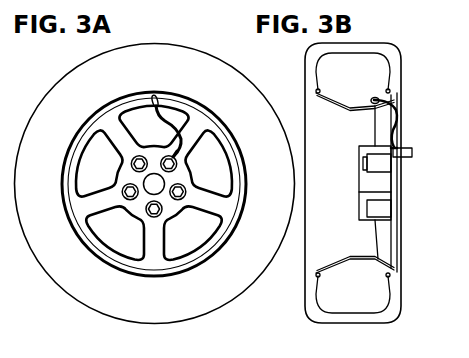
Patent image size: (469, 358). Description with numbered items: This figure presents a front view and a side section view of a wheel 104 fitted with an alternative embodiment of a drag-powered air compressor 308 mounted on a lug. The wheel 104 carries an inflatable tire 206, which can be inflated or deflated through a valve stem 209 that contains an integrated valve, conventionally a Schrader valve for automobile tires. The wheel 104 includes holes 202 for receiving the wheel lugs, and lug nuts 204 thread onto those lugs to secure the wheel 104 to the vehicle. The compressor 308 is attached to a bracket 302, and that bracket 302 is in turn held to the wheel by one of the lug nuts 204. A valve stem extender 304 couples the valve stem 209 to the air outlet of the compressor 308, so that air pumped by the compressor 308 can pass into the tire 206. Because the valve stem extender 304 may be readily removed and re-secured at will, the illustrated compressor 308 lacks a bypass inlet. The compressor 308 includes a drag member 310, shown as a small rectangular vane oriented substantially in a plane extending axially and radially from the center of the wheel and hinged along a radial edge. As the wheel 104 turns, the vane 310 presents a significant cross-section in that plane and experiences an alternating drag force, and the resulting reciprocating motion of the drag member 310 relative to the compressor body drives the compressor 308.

In FIG. 3A, the wheel 104 is at (207, 262).
In FIG. 3B, the wheel 104 is at (328, 263).
In FIG. 3B, the holes 202 is at (360, 163).
In FIG. 3A, the lug nuts 204 is at (178, 199).
In FIG. 3A, the inflatable tire 206 is at (236, 297).
In FIG. 3B, the inflatable tire 206 is at (401, 300).
In FIG. 3A, the valve stem 209 is at (152, 99).
In FIG. 3B, the valve stem 209 is at (373, 104).
In FIG. 3B, the bracket 302 is at (373, 157).
In FIG. 3A, the valve stem extender 304 is at (157, 112).
In FIG. 3B, the valve stem extender 304 is at (401, 121).
In FIG. 3A, the drag-powered air compressor 308 is at (178, 158).
In FIG. 3B, the drag-powered air compressor 308 is at (397, 148).
In FIG. 3B, the drag member 310 is at (413, 153).